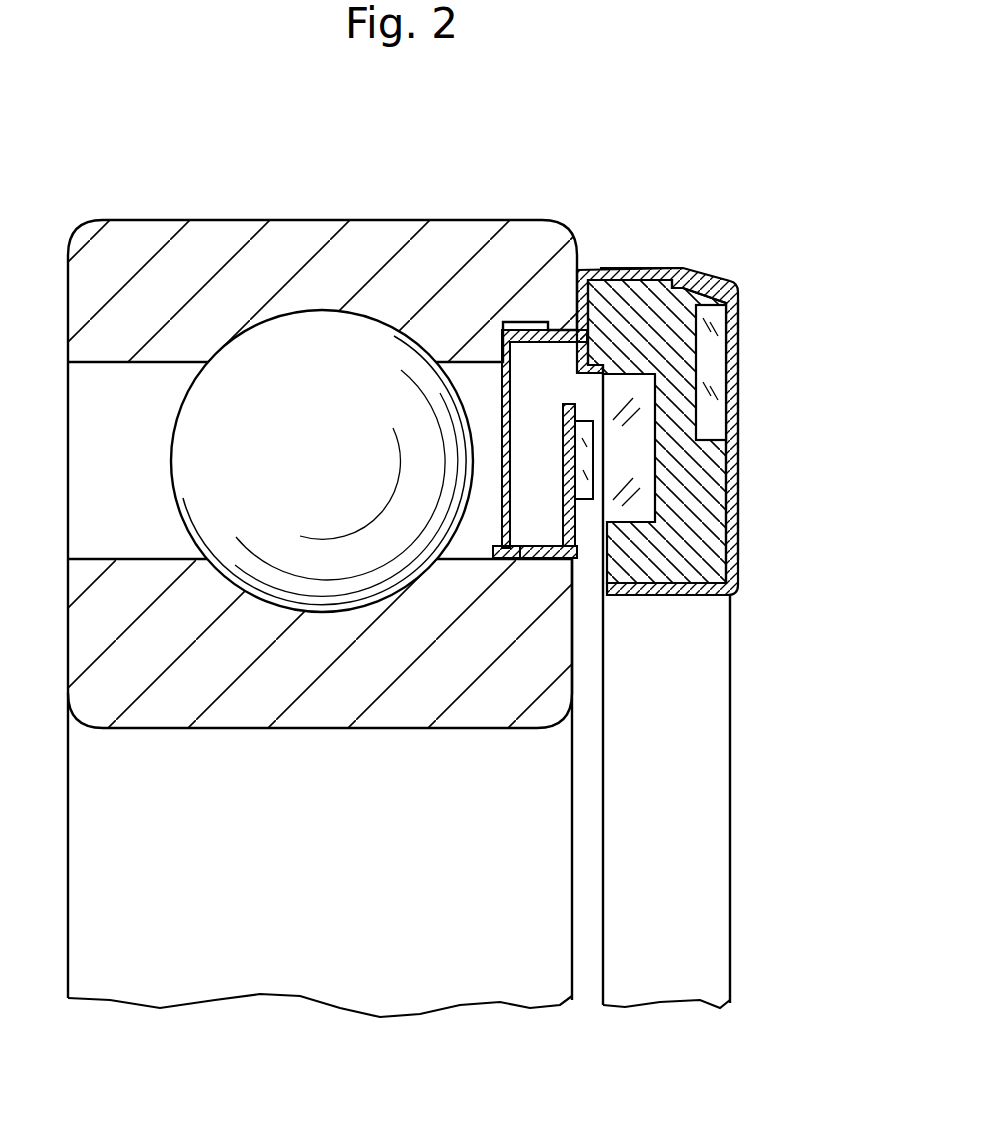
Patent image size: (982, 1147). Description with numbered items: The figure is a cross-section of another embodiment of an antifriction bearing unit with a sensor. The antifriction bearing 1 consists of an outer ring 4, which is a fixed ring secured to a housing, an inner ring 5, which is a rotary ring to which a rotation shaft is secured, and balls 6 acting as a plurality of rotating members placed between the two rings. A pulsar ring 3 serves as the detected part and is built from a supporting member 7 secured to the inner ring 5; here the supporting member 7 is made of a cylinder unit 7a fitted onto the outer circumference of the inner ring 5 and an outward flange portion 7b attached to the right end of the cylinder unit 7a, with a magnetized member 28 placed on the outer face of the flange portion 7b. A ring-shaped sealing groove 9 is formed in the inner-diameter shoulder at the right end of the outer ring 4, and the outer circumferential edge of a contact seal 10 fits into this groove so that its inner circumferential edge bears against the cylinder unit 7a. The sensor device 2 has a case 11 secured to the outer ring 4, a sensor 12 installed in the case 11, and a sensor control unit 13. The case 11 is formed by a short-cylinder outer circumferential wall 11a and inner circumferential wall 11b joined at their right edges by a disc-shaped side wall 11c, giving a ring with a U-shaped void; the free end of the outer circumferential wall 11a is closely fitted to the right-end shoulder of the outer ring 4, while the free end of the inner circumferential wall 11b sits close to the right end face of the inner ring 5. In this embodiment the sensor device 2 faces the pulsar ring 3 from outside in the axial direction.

The antifriction bearing 1 is at (160, 215).
The sensor device 2 is at (758, 311).
The pulsar ring 3 is at (648, 592).
The outer ring 4 is at (338, 218).
The inner ring 5 is at (384, 730).
The balls 6 is at (195, 478).
The supporting member 7 is at (577, 552).
The cylinder unit 7a is at (512, 566).
The outward flange portion 7b is at (548, 560).
The sealing groove 9 is at (530, 323).
The contact seal 10 is at (500, 347).
The case 11 is at (708, 278).
The outer circumferential wall 11a is at (642, 268).
The inner circumferential wall 11b is at (690, 597).
The side wall 11c is at (733, 343).
The sensor 12 is at (640, 380).
The sensor control unit 13 is at (707, 423).
The magnetized member 28 is at (583, 465).